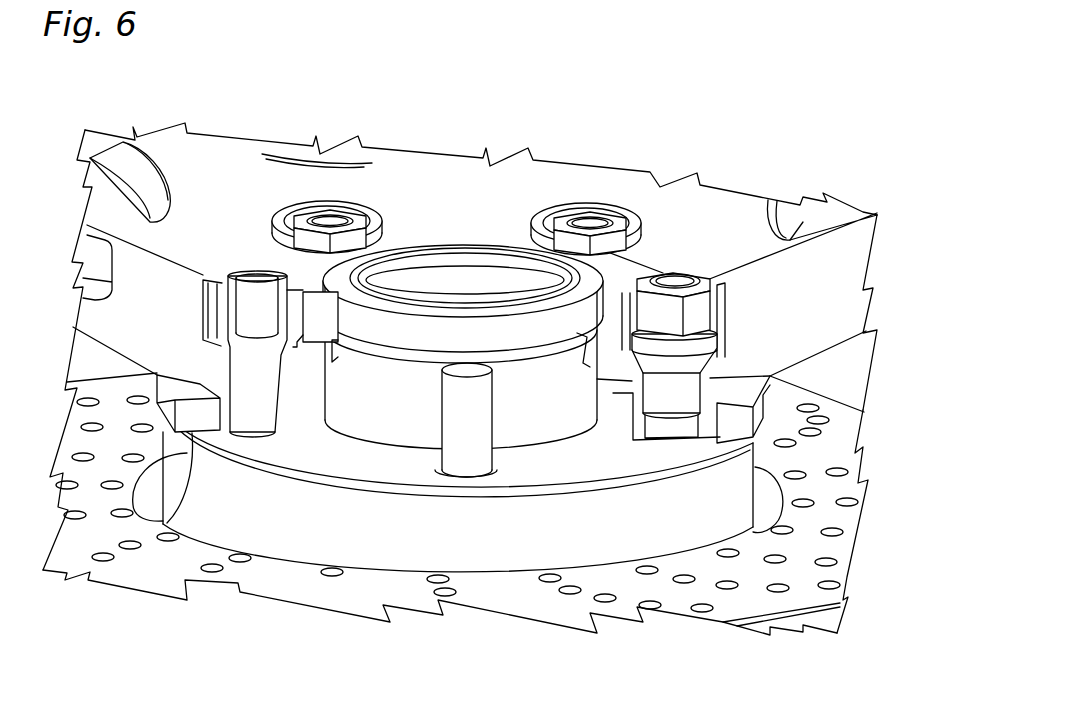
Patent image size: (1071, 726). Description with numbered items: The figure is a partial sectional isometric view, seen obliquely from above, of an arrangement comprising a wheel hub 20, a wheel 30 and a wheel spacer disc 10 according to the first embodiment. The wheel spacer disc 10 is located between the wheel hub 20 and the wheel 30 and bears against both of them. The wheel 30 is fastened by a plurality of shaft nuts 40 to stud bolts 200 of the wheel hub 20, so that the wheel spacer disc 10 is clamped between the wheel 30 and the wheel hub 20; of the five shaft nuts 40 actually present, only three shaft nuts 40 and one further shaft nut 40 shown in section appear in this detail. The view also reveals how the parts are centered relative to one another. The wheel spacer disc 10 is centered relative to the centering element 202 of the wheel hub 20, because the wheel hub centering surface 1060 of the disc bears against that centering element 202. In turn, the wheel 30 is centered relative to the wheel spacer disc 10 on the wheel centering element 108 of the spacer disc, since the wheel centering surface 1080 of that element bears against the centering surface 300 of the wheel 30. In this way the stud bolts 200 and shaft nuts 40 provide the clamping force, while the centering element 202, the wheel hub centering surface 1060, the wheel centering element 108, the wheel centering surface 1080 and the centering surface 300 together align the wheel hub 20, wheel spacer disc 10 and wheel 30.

The wheel spacer disc 10 is at (187, 412).
The wheel hub 20 is at (503, 548).
The wheel 30 is at (492, 218).
The shaft nut 40 is at (668, 310).
The wheel centering element 108 is at (313, 397).
The stud bolt 200 is at (458, 457).
The centering element 202 is at (562, 407).
The centering surface 300 is at (326, 358).
The wheel hub centering surface 1060 is at (343, 388).
The wheel centering surface 1080 is at (345, 358).